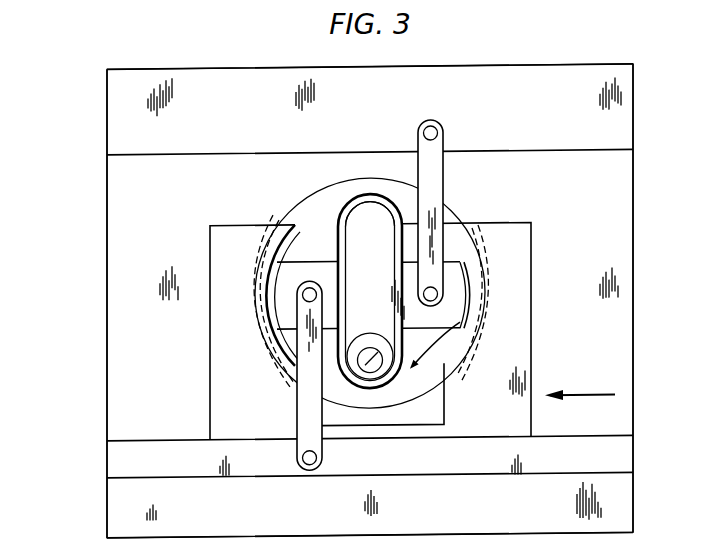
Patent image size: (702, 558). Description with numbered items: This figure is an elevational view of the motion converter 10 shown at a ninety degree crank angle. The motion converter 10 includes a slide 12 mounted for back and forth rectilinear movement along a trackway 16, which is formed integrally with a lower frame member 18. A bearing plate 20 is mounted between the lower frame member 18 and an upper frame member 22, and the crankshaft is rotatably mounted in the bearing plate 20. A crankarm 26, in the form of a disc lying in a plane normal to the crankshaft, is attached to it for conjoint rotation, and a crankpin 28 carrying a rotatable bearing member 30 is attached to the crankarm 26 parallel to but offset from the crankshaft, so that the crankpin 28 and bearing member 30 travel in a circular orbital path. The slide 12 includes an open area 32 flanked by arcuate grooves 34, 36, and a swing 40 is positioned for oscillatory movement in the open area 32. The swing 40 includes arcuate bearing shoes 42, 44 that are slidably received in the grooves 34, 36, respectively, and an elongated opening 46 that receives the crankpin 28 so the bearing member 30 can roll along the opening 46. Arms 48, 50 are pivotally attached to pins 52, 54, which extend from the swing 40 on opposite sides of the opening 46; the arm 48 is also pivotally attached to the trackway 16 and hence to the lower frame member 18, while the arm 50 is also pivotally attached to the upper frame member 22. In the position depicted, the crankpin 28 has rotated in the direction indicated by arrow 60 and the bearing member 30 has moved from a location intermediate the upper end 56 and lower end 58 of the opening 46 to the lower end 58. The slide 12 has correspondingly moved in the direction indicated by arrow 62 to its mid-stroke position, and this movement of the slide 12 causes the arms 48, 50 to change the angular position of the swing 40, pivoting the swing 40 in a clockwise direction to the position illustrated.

The motion converter 10 is at (70, 96).
The slide 12 is at (532, 268).
The trackway 16 is at (169, 468).
The lower frame member 18 is at (634, 512).
The bearing plate 20 is at (115, 312).
The upper frame member 22 is at (590, 74).
The crankarm 26 is at (296, 212).
The crankpin 28 is at (377, 357).
The bearing member 30 is at (358, 379).
The open area 32 is at (414, 420).
The arcuate groove 34 is at (281, 383).
The arcuate groove 36 is at (482, 227).
The swing 40 is at (310, 266).
The arcuate bearing shoe 42 is at (280, 333).
The arcuate bearing shoe 44 is at (470, 323).
The elongated opening 46 is at (371, 242).
The arm 48 is at (297, 446).
The arm 50 is at (429, 183).
The pin 52 is at (304, 296).
The pin 54 is at (438, 297).
The upper end 56 is at (351, 210).
The lower end 58 is at (378, 382).
The arrow 60 is at (450, 352).
The arrow 62 is at (593, 398).